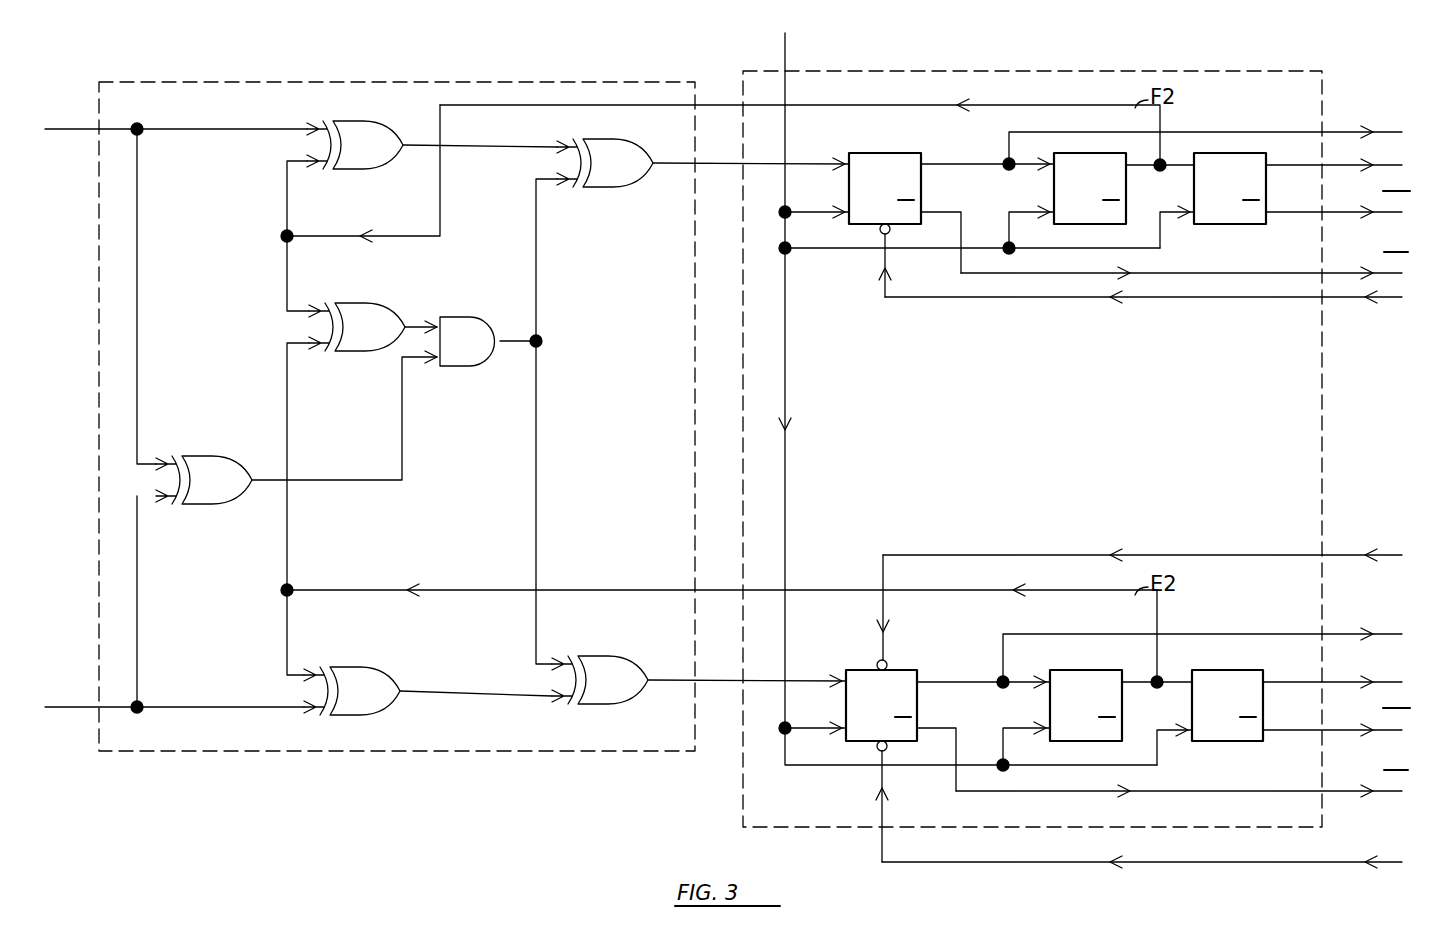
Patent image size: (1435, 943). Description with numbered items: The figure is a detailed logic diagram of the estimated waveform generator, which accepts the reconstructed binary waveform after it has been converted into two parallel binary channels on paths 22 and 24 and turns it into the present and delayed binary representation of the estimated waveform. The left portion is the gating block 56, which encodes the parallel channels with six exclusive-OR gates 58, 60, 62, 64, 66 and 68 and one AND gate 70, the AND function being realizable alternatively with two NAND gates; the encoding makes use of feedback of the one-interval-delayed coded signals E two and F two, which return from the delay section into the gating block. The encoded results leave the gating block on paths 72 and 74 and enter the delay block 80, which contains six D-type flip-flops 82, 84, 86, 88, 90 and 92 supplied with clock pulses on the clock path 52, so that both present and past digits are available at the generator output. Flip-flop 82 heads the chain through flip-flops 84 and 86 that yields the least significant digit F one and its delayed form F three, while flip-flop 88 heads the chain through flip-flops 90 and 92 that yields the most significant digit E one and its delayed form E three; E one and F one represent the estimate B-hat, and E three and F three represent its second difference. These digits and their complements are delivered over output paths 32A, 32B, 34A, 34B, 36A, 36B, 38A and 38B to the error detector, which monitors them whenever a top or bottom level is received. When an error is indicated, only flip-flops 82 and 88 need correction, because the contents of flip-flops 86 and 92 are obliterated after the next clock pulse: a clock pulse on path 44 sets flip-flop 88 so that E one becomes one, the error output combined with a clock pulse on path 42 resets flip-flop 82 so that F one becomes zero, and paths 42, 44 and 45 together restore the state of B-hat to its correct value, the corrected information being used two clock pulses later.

The path 22 is at (82, 128).
The path 24 is at (82, 706).
The clock line 52 is at (788, 48).
The gating circuit block 56 is at (636, 431).
The exclusive OR gate 58 is at (230, 461).
The exclusive OR gate 60 is at (383, 126).
The exclusive OR gate 62 is at (383, 310).
The exclusive OR gate 64 is at (381, 676).
The exclusive OR gate 66 is at (631, 148).
The exclusive OR gate 68 is at (624, 668).
The AND gate 70 is at (489, 332).
The output line of gate 66 72 is at (703, 160).
The output line of gate 68 74 is at (703, 679).
The delay 80 is at (877, 431).
The flip-flop 82 is at (890, 154).
The D flip-flop 84 is at (1095, 154).
The flip-flop 86 is at (1237, 154).
The flip-flop 88 is at (890, 671).
The D flip-flop 90 is at (1092, 671).
The flip-flop 92 is at (1237, 671).
The output line F1 32A is at (1358, 128).
The output line F1 complement 32B is at (1358, 279).
The output line F3 34A is at (1358, 170).
The output line F3 complement 34B is at (1358, 216).
The output line E1 36A is at (1358, 636).
The output line E1 complement 36B is at (1358, 795).
The output line E3 38A is at (1358, 684).
The output line E3 complement 38B is at (1358, 731).
The path 42 is at (1392, 300).
The path 44 is at (1392, 557).
The path 45 is at (1392, 865).